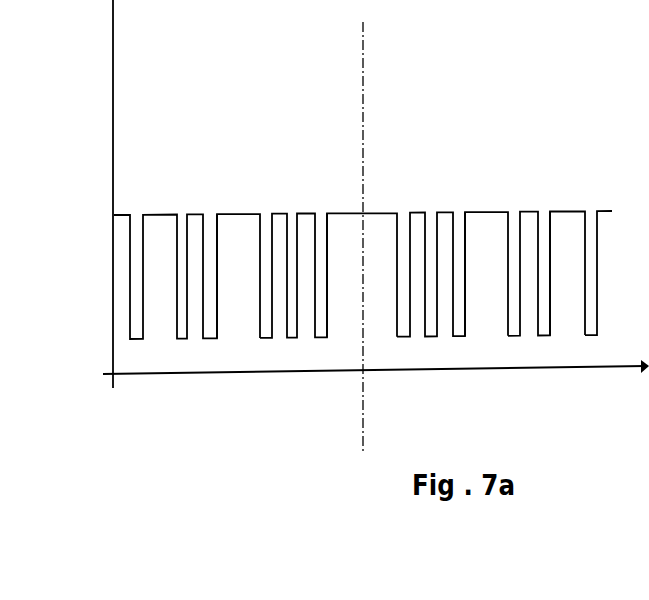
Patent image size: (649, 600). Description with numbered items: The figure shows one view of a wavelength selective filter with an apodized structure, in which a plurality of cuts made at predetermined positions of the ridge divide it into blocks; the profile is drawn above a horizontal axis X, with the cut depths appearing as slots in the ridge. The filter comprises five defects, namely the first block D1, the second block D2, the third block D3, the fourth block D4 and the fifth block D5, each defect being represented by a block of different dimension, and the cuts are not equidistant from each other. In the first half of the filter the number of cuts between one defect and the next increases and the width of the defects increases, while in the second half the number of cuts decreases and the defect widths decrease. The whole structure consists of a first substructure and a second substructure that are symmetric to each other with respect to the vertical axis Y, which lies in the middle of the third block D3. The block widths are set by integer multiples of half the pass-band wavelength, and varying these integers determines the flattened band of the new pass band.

The first block D1 is at (168, 143).
The second block D2 is at (234, 233).
The third block D3 is at (372, 236).
The fourth block D4 is at (478, 230).
The fifth block D5 is at (566, 237).
The X axis X is at (638, 389).
The vertical axis Y is at (362, 138).